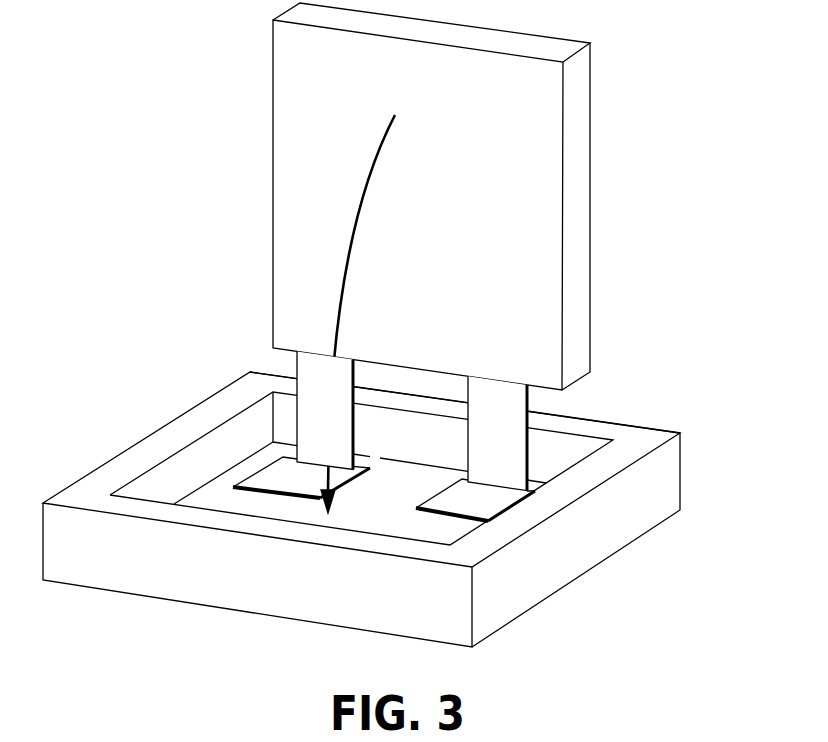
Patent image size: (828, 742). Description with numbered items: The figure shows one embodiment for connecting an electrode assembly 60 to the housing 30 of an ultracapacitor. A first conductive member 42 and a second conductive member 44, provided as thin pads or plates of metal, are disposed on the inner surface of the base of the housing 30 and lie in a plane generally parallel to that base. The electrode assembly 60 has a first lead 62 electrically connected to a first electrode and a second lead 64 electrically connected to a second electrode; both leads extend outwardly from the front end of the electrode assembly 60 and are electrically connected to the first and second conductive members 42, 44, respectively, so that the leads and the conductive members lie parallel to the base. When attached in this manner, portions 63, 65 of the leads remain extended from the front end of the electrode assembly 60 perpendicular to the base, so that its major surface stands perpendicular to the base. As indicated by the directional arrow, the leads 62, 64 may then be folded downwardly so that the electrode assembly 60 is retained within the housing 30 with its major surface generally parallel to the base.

The housing 30 is at (607, 570).
The first conductive member 42 is at (250, 488).
The second conductive member 44 is at (426, 507).
The electrode assembly 60 is at (540, 206).
The first lead 62 is at (285, 478).
The portion of first lead 63 is at (310, 417).
The second lead 64 is at (482, 498).
The portion of second lead 65 is at (513, 409).